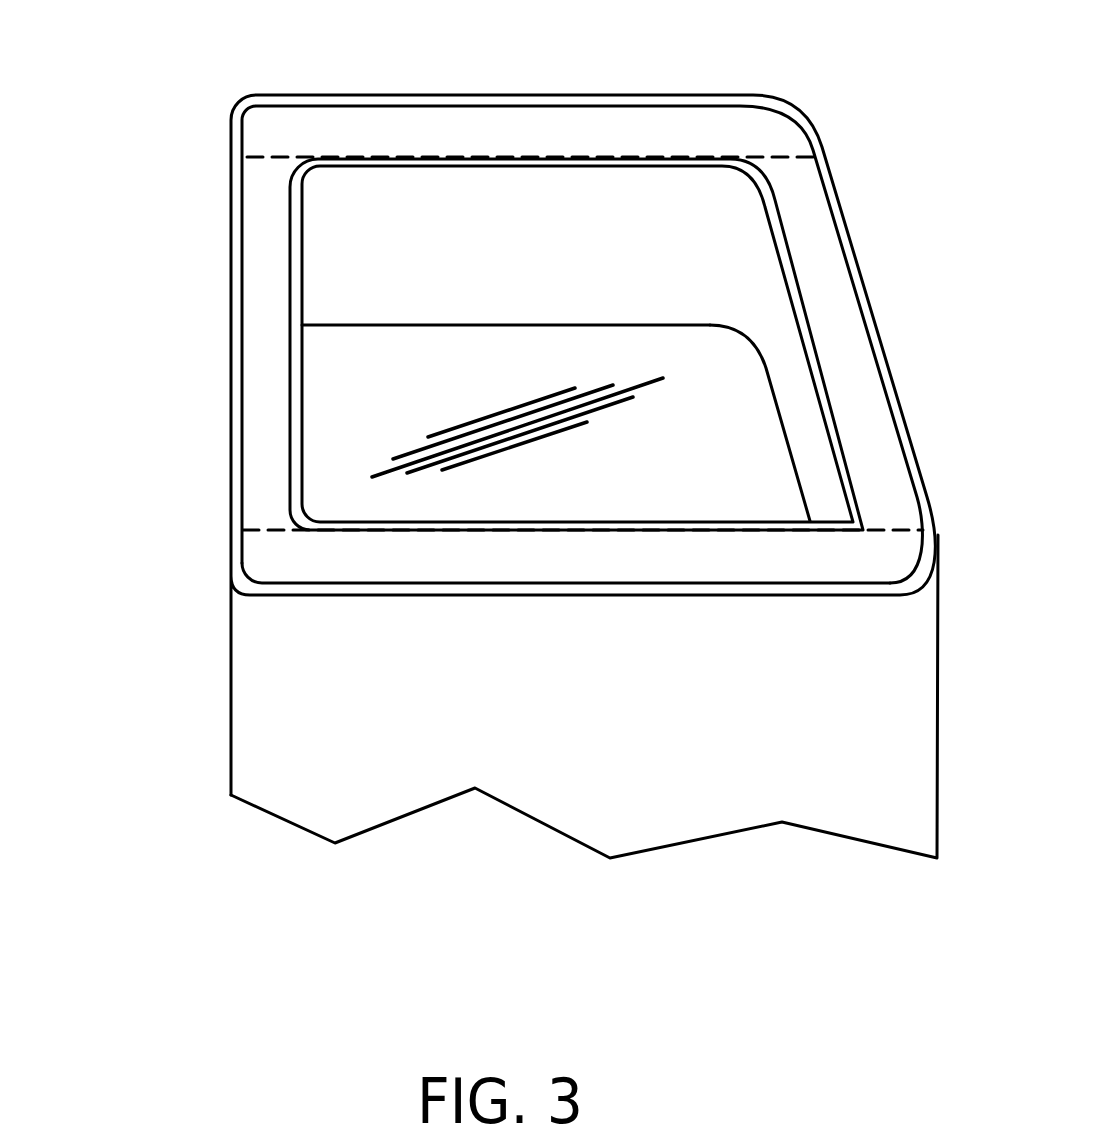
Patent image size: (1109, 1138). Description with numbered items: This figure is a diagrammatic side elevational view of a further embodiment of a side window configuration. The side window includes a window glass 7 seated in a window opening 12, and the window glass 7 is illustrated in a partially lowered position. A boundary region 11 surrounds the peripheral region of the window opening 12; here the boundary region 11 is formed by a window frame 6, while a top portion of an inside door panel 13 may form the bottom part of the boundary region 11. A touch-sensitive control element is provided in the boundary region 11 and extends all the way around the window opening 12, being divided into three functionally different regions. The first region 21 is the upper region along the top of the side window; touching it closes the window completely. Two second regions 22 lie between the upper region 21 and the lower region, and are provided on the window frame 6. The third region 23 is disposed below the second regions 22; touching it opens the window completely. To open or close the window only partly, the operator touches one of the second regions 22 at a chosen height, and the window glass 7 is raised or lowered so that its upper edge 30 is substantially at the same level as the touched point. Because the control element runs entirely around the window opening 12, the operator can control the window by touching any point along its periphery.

The window frame 6 is at (235, 388).
The boundary region 11 is at (582, 344).
The window glass 7 is at (478, 357).
The window opening 12 is at (440, 228).
The inside door panel 13 is at (372, 717).
The first region 21 is at (628, 130).
The second regions 22 is at (265, 313).
The third region 23 is at (652, 567).
The upper edge 30 is at (333, 325).